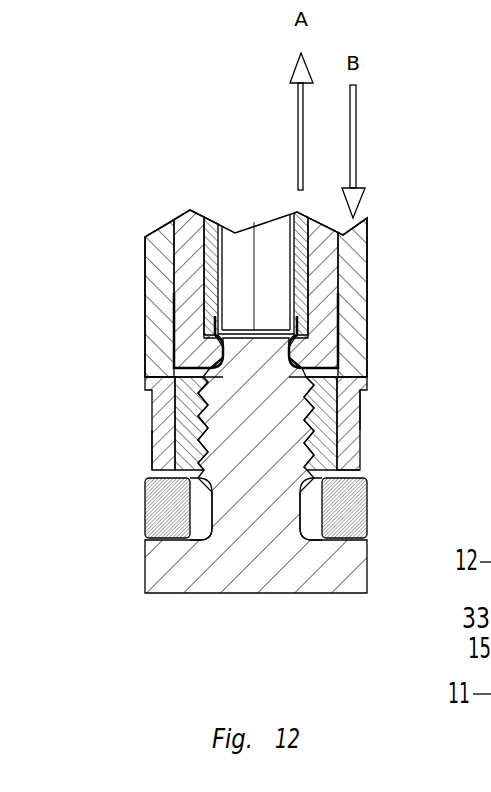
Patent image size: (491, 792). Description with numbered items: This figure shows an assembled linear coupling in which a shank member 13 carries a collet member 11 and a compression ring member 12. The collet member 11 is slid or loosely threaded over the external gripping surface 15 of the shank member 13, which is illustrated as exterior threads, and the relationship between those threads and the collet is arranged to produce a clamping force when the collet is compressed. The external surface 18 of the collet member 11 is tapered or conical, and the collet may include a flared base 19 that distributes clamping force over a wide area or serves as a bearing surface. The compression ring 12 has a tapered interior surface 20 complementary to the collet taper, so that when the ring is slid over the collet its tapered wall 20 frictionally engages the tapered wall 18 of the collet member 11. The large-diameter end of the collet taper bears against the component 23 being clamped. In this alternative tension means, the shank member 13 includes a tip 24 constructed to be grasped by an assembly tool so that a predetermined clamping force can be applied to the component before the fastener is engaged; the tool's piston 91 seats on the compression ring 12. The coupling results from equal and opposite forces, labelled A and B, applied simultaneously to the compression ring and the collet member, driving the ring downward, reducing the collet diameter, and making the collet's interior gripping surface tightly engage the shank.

The collet member 11 is at (150, 468).
The compression ring member 12 is at (362, 427).
The shank member 13 is at (145, 570).
The external gripping surface 15 is at (178, 386).
The external surface 18 is at (175, 422).
The flared base 19 is at (358, 470).
The tapered interior surface 20 is at (358, 397).
The component 23 is at (367, 512).
The tip 24 is at (297, 337).
The piston 91 is at (367, 253).